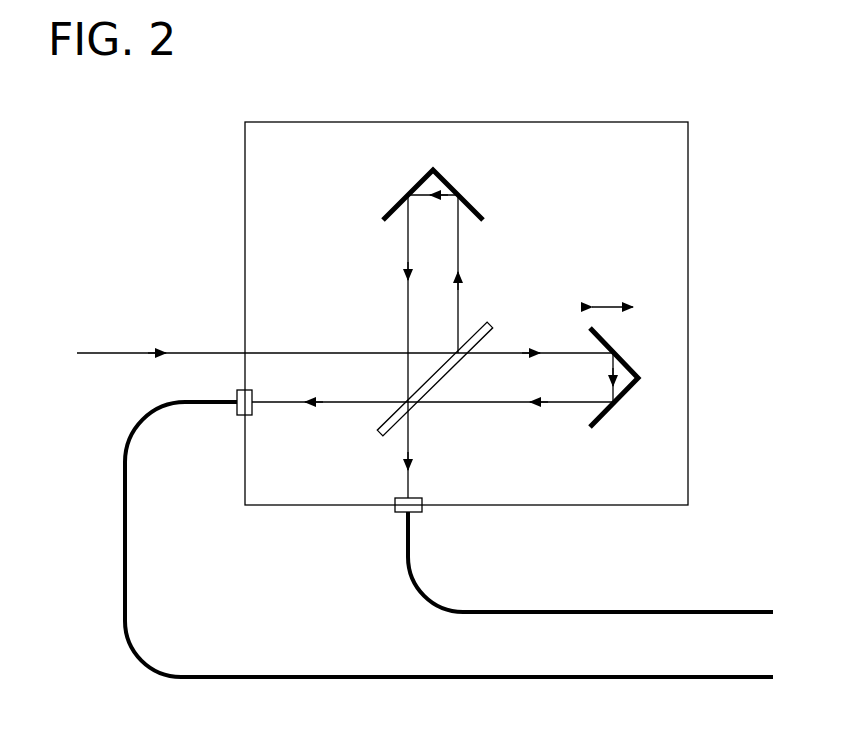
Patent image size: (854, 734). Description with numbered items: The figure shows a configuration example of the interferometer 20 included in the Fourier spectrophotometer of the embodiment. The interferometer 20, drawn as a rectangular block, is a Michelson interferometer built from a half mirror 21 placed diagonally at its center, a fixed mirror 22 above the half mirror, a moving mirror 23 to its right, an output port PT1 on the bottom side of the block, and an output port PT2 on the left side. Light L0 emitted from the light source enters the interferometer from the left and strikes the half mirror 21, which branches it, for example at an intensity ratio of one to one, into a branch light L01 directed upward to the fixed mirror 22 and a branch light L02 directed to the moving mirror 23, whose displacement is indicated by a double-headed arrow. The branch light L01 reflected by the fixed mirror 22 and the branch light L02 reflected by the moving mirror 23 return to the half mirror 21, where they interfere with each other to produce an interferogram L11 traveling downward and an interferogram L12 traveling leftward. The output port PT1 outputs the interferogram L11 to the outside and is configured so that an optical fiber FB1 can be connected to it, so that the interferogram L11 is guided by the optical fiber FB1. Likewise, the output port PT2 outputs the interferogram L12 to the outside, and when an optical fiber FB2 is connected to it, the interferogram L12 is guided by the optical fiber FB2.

The interferometer 20 is at (630, 122).
The half mirror 21 is at (434, 386).
The fixed mirror 22 is at (472, 208).
The moving mirror 23 is at (615, 352).
The light L0 is at (125, 352).
The branch light L01 is at (460, 302).
The branch light L02 is at (510, 350).
The interferogram L11 is at (410, 437).
The interferogram L12 is at (330, 405).
The output port PT1 is at (422, 510).
The output port PT2 is at (237, 395).
The optical fiber FB1 is at (660, 612).
The optical fiber FB2 is at (660, 678).